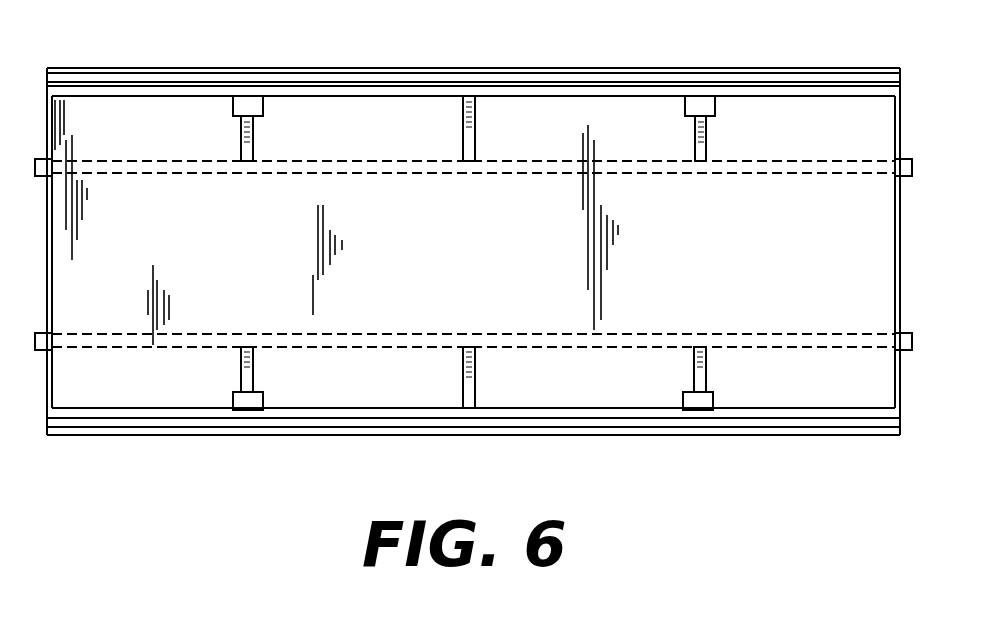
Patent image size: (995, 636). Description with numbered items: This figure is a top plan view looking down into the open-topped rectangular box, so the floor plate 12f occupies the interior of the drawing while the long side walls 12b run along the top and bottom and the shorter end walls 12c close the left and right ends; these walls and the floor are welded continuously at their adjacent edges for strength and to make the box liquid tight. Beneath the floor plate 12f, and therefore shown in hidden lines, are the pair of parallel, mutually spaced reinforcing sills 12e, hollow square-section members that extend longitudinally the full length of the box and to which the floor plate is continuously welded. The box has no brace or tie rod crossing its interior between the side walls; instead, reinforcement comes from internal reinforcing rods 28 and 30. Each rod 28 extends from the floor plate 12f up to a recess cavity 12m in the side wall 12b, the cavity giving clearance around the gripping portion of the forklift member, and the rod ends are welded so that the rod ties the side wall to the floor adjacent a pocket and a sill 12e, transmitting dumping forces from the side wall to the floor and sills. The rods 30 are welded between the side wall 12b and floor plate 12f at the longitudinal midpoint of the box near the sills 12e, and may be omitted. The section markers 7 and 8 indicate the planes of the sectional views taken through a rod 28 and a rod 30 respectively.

The side wall 12b is at (662, 446).
The end wall 12c is at (35, 120).
The reinforcing sill 12e is at (771, 167).
The floor plate 12f is at (510, 263).
The recess cavity 12m is at (263, 105).
The reinforcing rod 28 is at (253, 143).
The reinforcing rod 30 is at (475, 137).
The section line 7 is at (238, 43).
The section line 8 is at (458, 43).